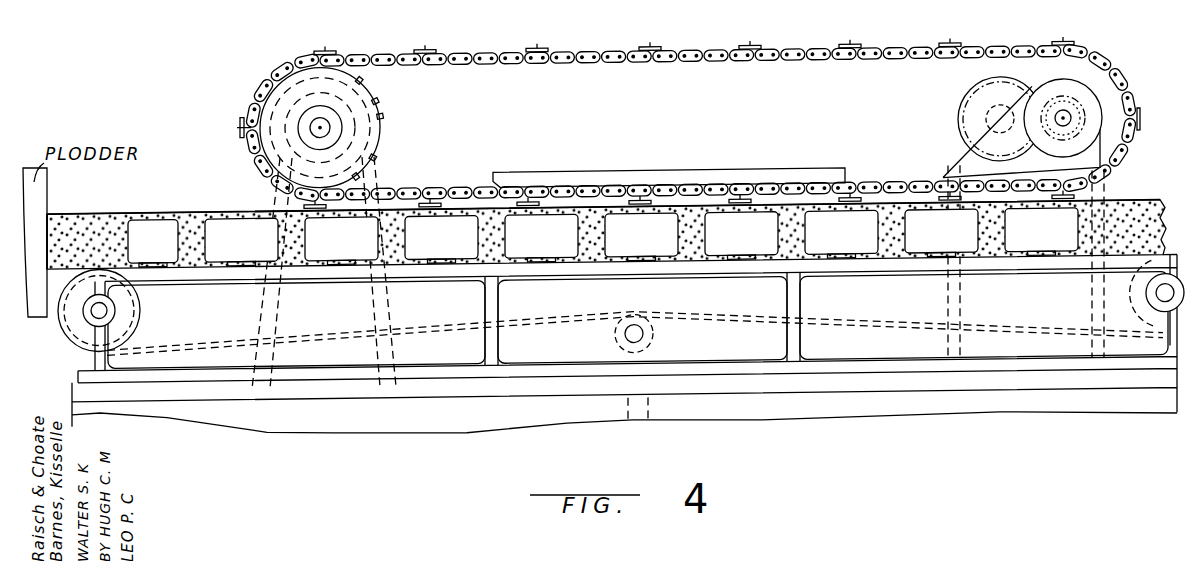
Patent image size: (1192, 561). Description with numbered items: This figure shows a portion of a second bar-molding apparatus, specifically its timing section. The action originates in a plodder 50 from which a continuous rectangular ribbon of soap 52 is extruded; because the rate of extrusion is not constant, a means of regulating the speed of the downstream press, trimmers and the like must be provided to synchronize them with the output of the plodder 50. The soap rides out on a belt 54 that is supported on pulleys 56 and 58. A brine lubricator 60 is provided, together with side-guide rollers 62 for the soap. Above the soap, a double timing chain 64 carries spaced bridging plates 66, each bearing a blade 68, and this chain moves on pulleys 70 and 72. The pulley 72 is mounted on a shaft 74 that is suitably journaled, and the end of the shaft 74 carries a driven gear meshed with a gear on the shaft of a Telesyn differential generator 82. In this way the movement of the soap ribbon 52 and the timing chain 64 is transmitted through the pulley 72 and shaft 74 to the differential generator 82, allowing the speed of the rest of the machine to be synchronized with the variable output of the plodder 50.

The plodder 50 is at (40, 214).
The ribbon of soap 52 is at (112, 220).
The belt 54 is at (195, 272).
The pulley 56 is at (78, 330).
The pulley 58 is at (1132, 300).
The brine lubricator 60 is at (168, 227).
The side-guide rollers 62 is at (233, 228).
The double timing chain 64 is at (465, 65).
The bridging plates 66 is at (433, 48).
The blade 68 is at (425, 46).
The pulley 70 is at (385, 137).
The pulley 72 is at (1112, 93).
The shaft 74 is at (1070, 127).
The Telesyn differential generator 82 is at (980, 118).